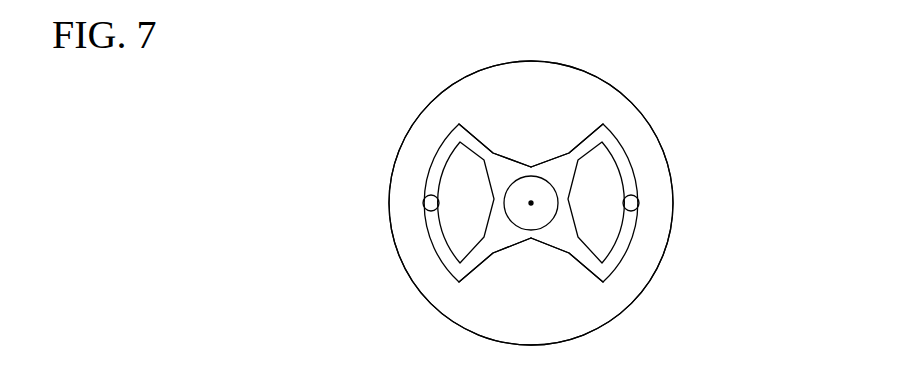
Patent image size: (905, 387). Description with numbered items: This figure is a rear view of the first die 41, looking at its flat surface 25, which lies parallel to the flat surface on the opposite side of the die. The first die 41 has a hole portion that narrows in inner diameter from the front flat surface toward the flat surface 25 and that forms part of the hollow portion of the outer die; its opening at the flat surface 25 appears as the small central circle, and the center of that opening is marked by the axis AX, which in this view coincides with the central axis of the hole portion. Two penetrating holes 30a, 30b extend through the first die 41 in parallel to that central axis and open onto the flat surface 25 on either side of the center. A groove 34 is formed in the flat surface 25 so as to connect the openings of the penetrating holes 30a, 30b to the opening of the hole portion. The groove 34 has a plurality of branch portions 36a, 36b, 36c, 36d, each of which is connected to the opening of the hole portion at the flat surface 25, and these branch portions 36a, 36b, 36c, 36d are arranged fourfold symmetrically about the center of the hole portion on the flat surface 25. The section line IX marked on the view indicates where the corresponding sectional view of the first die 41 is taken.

The flat surface 25 is at (550, 210).
The first die 41 is at (499, 185).
The groove 34 is at (618, 262).
The branch portion 36a is at (570, 96).
The branch portion 36b is at (575, 312).
The branch portion 36c is at (429, 262).
The branch portion 36d is at (484, 96).
The penetrating hole 30a is at (352, 188).
The penetrating hole 30b is at (706, 185).
The axis AX is at (519, 293).
The line IX- IX is at (665, 75).